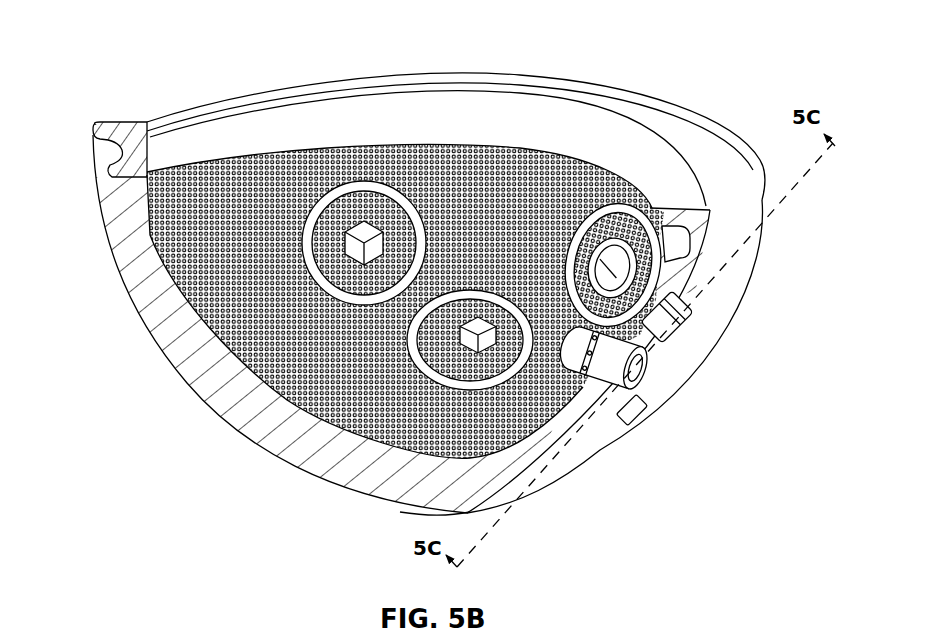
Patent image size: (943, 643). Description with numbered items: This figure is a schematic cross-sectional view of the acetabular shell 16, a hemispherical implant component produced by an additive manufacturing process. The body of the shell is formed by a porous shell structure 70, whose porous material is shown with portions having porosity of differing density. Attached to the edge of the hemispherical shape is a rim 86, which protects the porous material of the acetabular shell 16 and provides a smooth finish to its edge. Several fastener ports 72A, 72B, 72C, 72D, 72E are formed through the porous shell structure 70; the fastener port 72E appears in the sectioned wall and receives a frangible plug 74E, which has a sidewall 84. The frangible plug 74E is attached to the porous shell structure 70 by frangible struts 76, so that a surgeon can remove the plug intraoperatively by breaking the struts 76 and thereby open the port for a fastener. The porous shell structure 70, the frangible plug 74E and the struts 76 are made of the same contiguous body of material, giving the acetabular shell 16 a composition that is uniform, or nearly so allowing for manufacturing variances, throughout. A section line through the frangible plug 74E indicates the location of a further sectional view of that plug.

The acetabular shell 16 is at (732, 44).
The porous shell structure 70 is at (281, 470).
The rim 86 is at (129, 134).
The fastener port 72A is at (372, 182).
The fastener port 72B is at (484, 290).
The fastener port 72C is at (630, 200).
The fastener port 72D is at (480, 510).
The fastener port 72E is at (692, 332).
The sidewall 84 is at (662, 358).
The frangible plug 74E is at (680, 394).
The frangible struts 76 is at (693, 342).